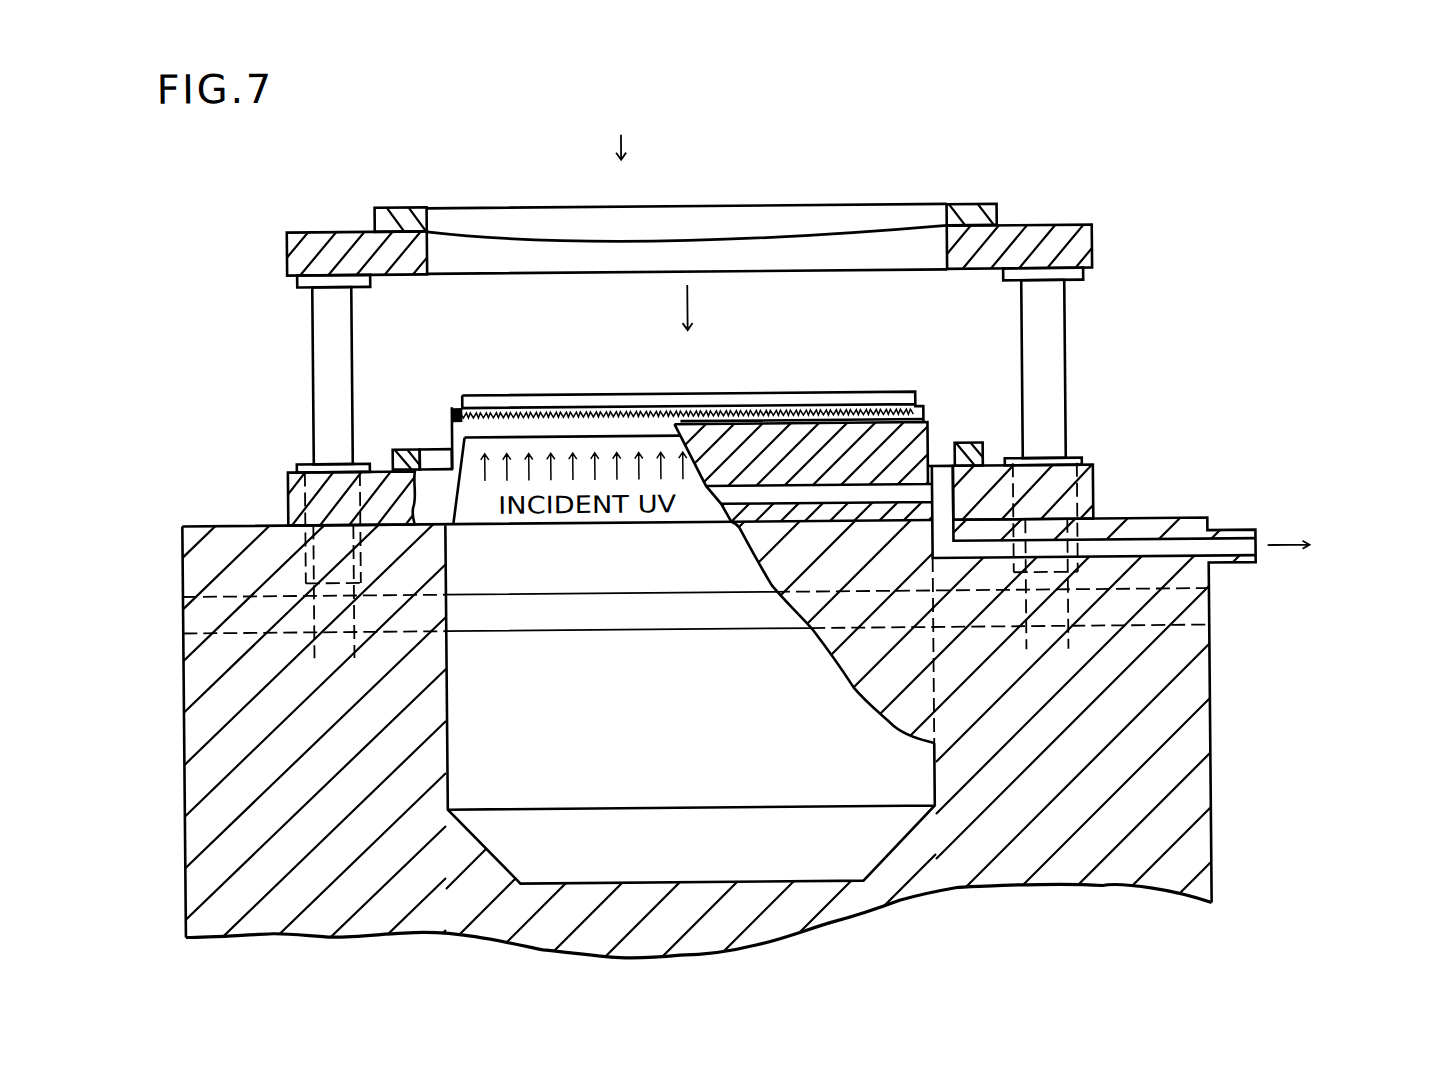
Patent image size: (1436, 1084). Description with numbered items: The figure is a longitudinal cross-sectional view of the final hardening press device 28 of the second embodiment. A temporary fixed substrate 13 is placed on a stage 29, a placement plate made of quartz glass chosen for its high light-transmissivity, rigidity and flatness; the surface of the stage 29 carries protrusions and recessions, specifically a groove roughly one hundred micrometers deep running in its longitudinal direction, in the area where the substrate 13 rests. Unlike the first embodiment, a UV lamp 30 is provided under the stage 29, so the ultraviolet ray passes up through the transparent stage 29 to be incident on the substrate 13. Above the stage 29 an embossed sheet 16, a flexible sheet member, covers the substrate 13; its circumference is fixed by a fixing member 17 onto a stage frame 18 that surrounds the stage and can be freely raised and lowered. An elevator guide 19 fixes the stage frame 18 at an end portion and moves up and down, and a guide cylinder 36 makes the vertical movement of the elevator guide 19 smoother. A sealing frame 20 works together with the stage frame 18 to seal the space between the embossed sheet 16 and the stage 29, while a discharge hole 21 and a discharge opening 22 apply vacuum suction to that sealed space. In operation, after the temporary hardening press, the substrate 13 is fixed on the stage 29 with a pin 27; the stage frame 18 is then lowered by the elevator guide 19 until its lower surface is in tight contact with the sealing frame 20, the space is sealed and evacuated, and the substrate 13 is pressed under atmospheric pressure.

The temporary fixed substrate 13 is at (917, 403).
The embossed sheet 16 is at (840, 236).
The fixing member 17 is at (406, 214).
The stage frame 18 is at (308, 240).
The elevator guide 19 is at (315, 422).
The sealing frame 20 is at (407, 446).
The discharge hole 21 is at (954, 452).
The discharge opening 22 is at (1231, 567).
The pin 27 is at (459, 400).
The final hardening press device 28 is at (624, 127).
The stage 29 is at (572, 407).
The UV lamp 30 is at (875, 781).
The guide cylinder 36 is at (1080, 468).